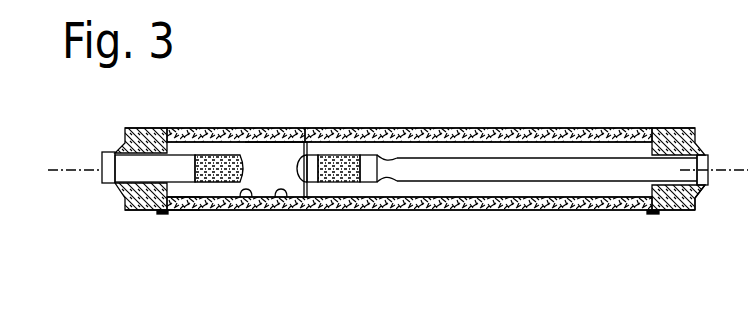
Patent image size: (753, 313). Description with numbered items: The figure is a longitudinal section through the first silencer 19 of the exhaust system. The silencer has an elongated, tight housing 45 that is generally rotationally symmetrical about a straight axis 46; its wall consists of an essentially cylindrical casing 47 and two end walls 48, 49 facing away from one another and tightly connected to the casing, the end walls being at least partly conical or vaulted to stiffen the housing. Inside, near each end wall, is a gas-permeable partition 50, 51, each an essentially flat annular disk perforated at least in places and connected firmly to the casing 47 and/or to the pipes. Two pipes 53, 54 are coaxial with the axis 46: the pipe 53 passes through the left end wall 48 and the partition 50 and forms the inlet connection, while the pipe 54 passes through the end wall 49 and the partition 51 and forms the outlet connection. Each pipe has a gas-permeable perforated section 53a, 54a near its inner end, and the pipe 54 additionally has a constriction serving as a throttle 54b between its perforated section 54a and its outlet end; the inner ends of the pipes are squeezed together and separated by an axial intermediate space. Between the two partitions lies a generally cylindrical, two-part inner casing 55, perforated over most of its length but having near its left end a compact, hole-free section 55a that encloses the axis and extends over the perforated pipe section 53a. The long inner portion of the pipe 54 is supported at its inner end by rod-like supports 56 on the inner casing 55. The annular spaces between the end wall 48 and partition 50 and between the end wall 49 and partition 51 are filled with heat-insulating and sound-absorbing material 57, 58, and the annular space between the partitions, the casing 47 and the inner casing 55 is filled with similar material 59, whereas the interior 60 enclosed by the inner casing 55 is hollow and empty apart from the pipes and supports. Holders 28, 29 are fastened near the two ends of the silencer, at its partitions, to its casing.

The first silencer 19 is at (130, 127).
The housing 45 is at (250, 127).
The casing 47 is at (368, 128).
The heat-insulating and sound-absorbing material 59 is at (527, 211).
The end wall 48 is at (125, 140).
The heat-insulating and sound-absorbing material 57 is at (138, 211).
The gas-permeable partition 50 is at (180, 208).
The holder 28 is at (160, 214).
The holder 29 is at (652, 214).
The pipe 53 is at (190, 183).
The perforated section 53a is at (222, 183).
The axis 46 is at (76, 172).
The interior 60 is at (276, 152).
The inner casing 55 is at (290, 196).
The compact section 55a is at (256, 197).
The rod-like support 56 is at (303, 151).
The perforated section 54a is at (345, 183).
The throttle 54b is at (384, 181).
The pipe 54 is at (483, 182).
The end wall 49 is at (696, 133).
The gas-permeable partition 51 is at (652, 190).
The heat-insulating and sound-absorbing material 58 is at (678, 200).